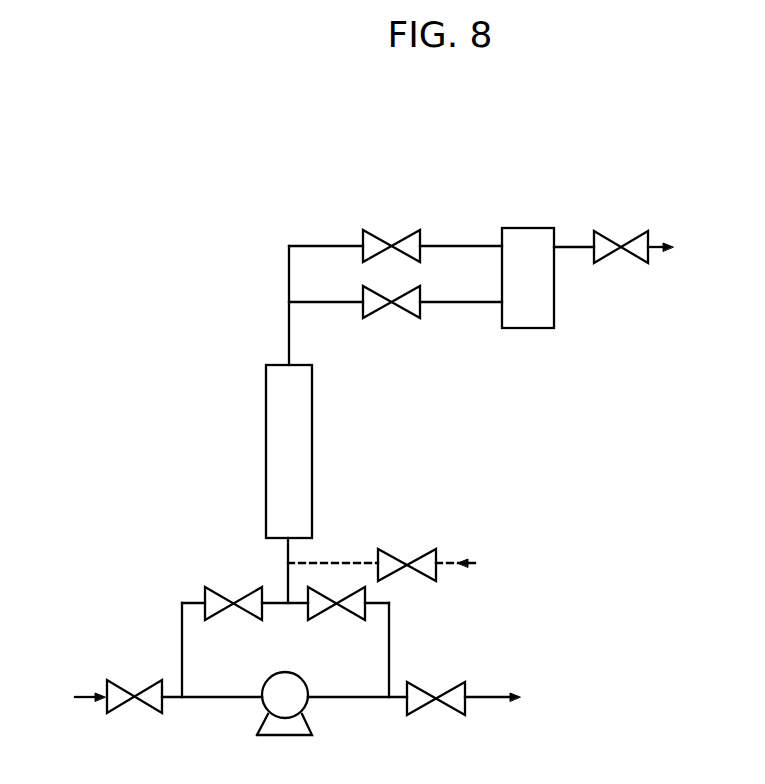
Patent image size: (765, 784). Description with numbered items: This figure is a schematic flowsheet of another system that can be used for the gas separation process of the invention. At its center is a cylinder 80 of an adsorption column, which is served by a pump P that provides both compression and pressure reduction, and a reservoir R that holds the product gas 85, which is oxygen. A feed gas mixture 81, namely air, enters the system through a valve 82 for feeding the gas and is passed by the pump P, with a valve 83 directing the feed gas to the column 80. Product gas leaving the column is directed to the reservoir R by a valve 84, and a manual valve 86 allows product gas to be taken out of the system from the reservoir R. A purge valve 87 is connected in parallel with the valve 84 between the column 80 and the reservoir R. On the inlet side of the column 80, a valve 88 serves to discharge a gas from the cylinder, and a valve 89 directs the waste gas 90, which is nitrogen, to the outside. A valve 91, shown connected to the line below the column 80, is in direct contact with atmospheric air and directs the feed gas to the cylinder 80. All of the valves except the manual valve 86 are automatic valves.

The cylinder of adsorption column 80 is at (302, 455).
The feed gas mixture 81 is at (82, 693).
The valve for feeding the gas 82 is at (135, 705).
The valve for directing the feed gas to the column 83 is at (337, 612).
The valve for directing product gas to the reservoir 84 is at (392, 244).
The product gas 85 is at (532, 242).
The manual valve for taking product gas out of the system 86 is at (622, 241).
The purge valve 87 is at (392, 304).
The valve for discharging a gas from the cylinder 88 is at (232, 593).
The valve for directing waste gas to outside 89 is at (437, 706).
The waste gas 90 is at (510, 698).
The valve in direct contact with atmospheric air 91 is at (397, 565).
The pump P is at (272, 700).
The reservoir R is at (554, 317).